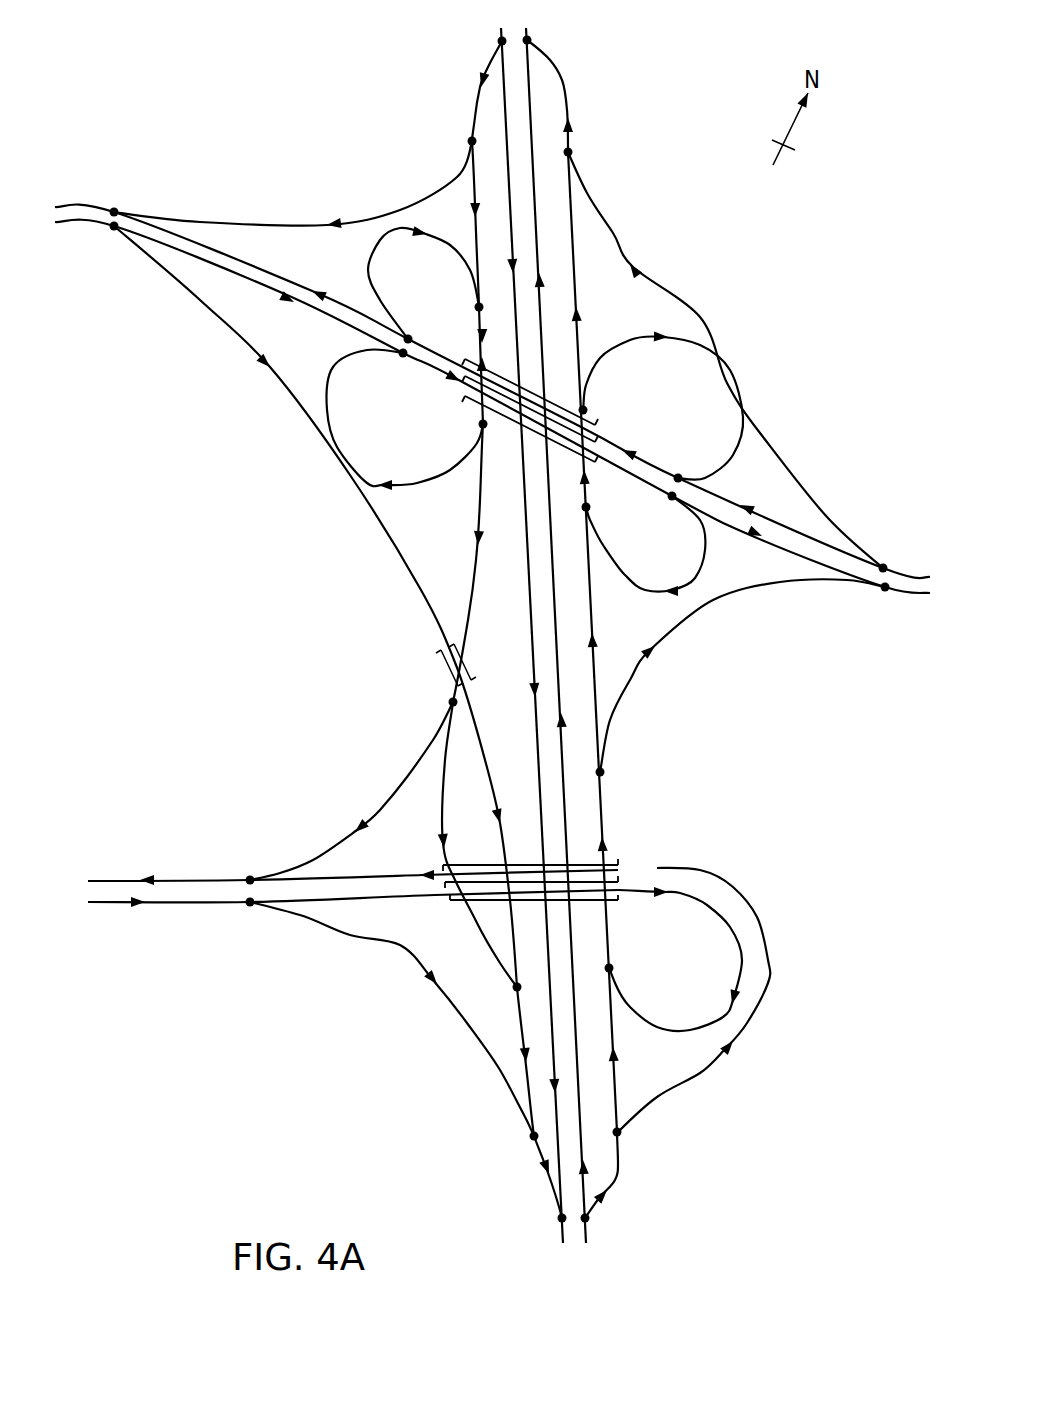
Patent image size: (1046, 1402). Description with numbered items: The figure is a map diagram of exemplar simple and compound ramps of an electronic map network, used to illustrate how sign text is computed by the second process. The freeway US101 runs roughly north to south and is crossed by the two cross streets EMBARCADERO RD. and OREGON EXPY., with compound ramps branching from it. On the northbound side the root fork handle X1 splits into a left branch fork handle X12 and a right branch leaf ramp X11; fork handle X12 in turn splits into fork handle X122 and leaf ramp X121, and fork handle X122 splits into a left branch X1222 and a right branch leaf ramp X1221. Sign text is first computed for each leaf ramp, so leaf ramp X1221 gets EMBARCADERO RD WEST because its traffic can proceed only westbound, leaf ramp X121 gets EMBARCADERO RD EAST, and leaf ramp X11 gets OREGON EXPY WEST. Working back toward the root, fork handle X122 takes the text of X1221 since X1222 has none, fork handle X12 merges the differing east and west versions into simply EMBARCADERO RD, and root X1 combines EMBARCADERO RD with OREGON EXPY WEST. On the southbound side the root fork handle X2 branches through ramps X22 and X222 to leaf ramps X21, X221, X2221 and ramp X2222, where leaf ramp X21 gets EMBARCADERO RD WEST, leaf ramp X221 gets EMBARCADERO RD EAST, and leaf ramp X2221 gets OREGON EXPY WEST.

The fork handle (root) X1 is at (619, 1177).
The leaf ramp X11 is at (692, 1002).
The fork handle X12 is at (674, 980).
The leaf ramp X121 is at (743, 677).
The fork handle X122 is at (644, 563).
The leaf ramp X1221 is at (661, 407).
The left branch X1222 is at (726, 360).
The fork handle (root) X2 is at (481, 233).
The leaf ramp X21 is at (291, 185).
The ramp X22 is at (423, 274).
The leaf ramp X221 is at (405, 420).
The ramp X222 is at (449, 565).
The leaf ramp X2221 is at (350, 793).
The ramp X2222 is at (446, 847).
The element US101 is at (552, 800).
The Embarcadero Road EMBARCADERO RD. is at (792, 543).
The Oregon Expressway OREGON EXPY. is at (173, 887).